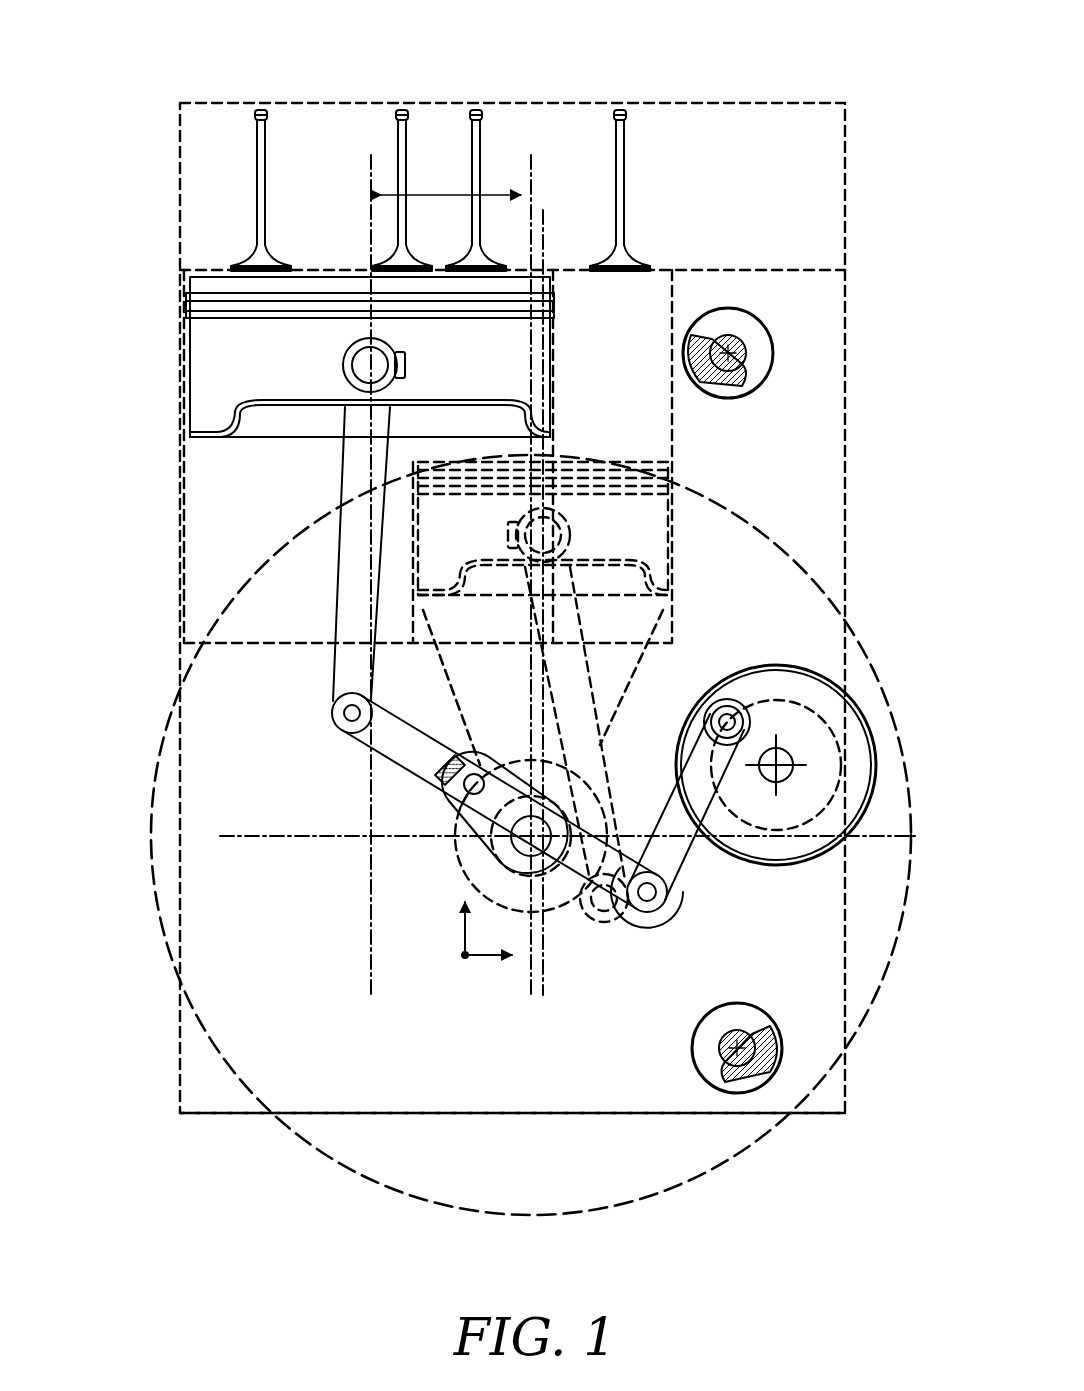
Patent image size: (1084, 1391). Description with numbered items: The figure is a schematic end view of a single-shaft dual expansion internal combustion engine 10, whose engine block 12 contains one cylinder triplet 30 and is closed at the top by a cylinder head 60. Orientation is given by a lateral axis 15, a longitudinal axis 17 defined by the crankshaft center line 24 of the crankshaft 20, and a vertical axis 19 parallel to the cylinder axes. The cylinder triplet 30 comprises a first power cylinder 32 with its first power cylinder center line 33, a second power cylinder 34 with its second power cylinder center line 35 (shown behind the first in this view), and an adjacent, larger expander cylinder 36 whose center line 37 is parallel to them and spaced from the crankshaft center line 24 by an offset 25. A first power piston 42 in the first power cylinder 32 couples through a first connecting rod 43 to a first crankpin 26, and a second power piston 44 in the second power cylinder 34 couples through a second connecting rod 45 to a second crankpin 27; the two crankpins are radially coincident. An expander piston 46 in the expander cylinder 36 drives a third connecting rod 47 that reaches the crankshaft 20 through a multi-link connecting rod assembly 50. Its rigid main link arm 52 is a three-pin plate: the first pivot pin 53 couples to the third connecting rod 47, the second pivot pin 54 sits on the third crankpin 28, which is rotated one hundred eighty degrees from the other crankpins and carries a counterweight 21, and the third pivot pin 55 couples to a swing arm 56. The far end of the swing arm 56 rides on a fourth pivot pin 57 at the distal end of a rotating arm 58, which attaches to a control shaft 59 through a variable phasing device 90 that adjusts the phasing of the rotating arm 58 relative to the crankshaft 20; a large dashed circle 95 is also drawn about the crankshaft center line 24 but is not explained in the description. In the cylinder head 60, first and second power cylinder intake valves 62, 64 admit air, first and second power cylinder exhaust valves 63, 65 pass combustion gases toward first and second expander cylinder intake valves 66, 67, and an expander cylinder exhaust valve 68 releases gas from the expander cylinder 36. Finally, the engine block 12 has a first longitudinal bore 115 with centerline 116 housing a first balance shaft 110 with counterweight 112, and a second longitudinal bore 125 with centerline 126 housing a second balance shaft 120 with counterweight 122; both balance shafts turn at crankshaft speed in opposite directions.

The engine 10 is at (132, 80).
The engine block 12 is at (168, 333).
The lateral axis 15 is at (495, 958).
The longitudinal axis 17 is at (460, 960).
The vertical axis 19 is at (460, 905).
The crankshaft 20 is at (474, 774).
The counterweight 21 is at (415, 790).
The crankshaft center line 24 is at (470, 880).
The offset 25 is at (497, 195).
The first crankpin 26 is at (627, 941).
The second crankpin 27 is at (596, 930).
The third crankpin 28 is at (440, 775).
The cylinder triplet 30 is at (665, 262).
The first power cylinder 32 is at (624, 456).
The first power cylinder center line 33 is at (603, 531).
The second power cylinder 34 is at (672, 567).
The second power cylinder center line 35 is at (543, 233).
The expander cylinder 36 is at (168, 580).
The expander cylinder center line 37 is at (368, 195).
The first power piston 42 is at (614, 519).
The first connecting rod 43 is at (590, 723).
The second power piston 44 is at (655, 530).
The second connecting rod 45 is at (613, 750).
The expander piston 46 is at (192, 312).
The third connecting rod 47 is at (345, 590).
The multi-link connecting rod assembly 50 is at (683, 917).
The main link arm 52 is at (332, 700).
The first pivot pin 53 is at (344, 718).
The second pivot pin 54 is at (362, 771).
The third pivot pin 55 is at (657, 888).
The swing arm 56 is at (673, 823).
The fourth pivot pin 57 is at (737, 712).
The rotating arm 58 is at (757, 740).
The control shaft 59 is at (793, 773).
The cylinder head 60 is at (168, 185).
The first power cylinder intake valve 62 is at (681, 167).
The first power cylinder exhaust valve 63 is at (438, 164).
The second power cylinder intake valve 64 is at (625, 145).
The second power cylinder exhaust valve 65 is at (465, 140).
The first expander cylinder intake valve 66 is at (351, 164).
The second expander cylinder intake valve 67 is at (395, 165).
The expander cylinder exhaust valve 68 is at (255, 165).
The variable phasing device 90 is at (863, 827).
The crank envelope 95 is at (430, 1200).
The first balance shaft 110 is at (760, 325).
The counterweight 112 is at (753, 387).
The first longitudinal bore 115 is at (740, 337).
The centerline 116 is at (747, 345).
The second balance shaft 120 is at (767, 1043).
The counterweight 122 is at (757, 1090).
The second longitudinal bore 125 is at (773, 1017).
The centerline 126 is at (767, 1080).